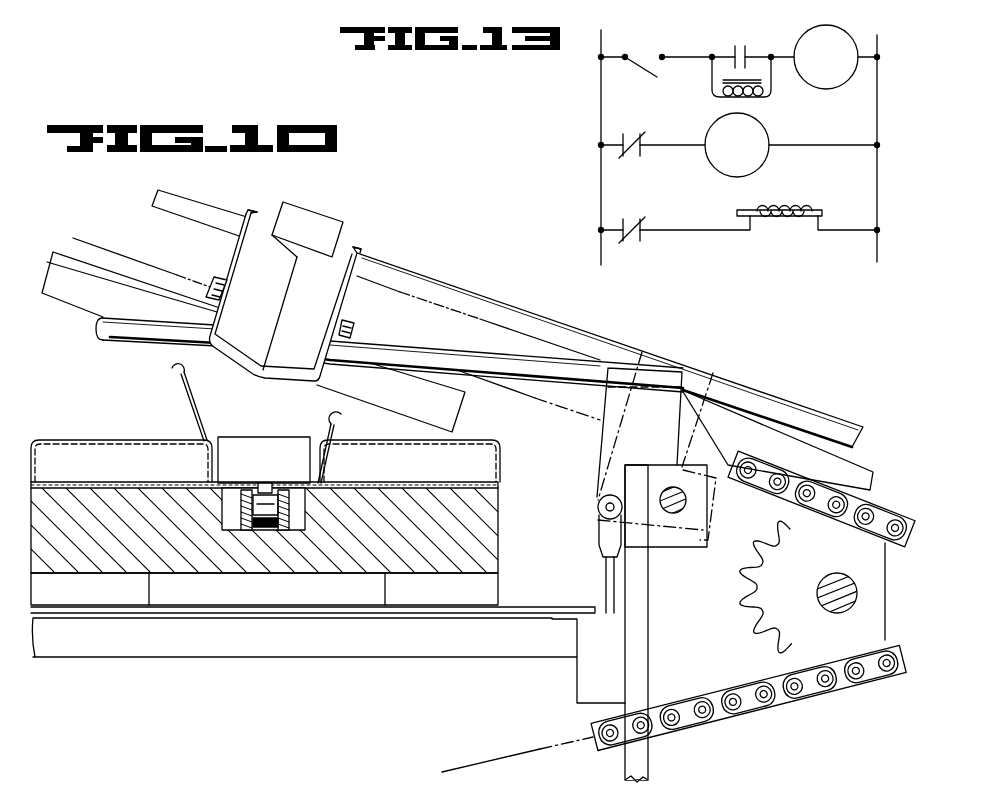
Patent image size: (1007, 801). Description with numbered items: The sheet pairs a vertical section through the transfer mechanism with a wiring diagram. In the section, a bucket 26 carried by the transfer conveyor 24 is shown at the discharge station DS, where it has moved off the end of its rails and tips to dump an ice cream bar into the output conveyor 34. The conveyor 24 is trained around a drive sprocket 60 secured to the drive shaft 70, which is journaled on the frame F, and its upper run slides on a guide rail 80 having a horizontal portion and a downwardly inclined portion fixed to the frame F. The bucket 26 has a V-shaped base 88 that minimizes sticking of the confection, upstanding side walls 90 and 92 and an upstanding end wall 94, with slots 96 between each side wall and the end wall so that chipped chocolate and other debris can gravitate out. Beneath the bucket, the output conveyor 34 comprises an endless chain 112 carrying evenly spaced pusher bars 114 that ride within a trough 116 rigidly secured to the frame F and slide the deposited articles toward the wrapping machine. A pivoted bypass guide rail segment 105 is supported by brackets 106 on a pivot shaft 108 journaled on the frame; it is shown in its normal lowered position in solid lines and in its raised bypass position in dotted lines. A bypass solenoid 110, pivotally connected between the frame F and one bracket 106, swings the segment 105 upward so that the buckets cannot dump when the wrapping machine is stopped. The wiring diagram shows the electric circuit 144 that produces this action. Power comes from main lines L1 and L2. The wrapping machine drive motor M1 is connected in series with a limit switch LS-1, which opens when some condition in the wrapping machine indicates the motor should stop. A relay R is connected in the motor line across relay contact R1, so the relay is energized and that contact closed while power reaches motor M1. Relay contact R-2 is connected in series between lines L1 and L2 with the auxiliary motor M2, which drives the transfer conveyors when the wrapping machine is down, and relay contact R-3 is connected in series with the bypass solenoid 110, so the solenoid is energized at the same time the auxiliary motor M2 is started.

In FIG. 13, the electric circuit 144 is at (702, 137).
In FIG. 13, the bypass solenoid 110 is at (781, 220).
In FIG. 10, the bypass solenoid 110 is at (614, 681).
In FIG. 10, the transfer conveyor 24 is at (119, 250).
In FIG. 10, the article carrying bucket 26 is at (340, 213).
In FIG. 10, the guide rail 80 is at (62, 252).
In FIG. 10, the V-shaped base 88 is at (252, 348).
In FIG. 10, the side wall 90 is at (293, 303).
In FIG. 10, the side wall 92 is at (350, 308).
In FIG. 10, the end wall 94 is at (297, 212).
In FIG. 10, the slots 96 is at (272, 225).
In FIG. 10, the bypass guide rail segment 105 is at (588, 333).
In FIG. 10, the bracket 106 is at (607, 430).
In FIG. 10, the pivot shaft 108 is at (669, 487).
In FIG. 10, the endless chain 112 is at (286, 488).
In FIG. 10, the pusher bar 114 is at (275, 445).
In FIG. 10, the trough 116 is at (213, 455).
In FIG. 10, the output conveyor 34 is at (248, 504).
In FIG. 10, the drive sprocket 60 is at (808, 634).
In FIG. 10, the drive shaft 70 is at (830, 582).
In FIG. 10, the discharge station DS is at (122, 392).
In FIG. 10, the frame F is at (487, 563).
In FIG. 13, the main line L1 is at (597, 136).
In FIG. 13, the main line L2 is at (874, 138).
In FIG. 13, the limit switch LS-1 is at (643, 58).
In FIG. 13, the relay contact R1 is at (748, 52).
In FIG. 13, the relay R is at (771, 93).
In FIG. 13, the drive motor M1 is at (838, 68).
In FIG. 13, the auxiliary motor M2 is at (750, 156).
In FIG. 13, the relay contact R-2 is at (624, 160).
In FIG. 13, the relay contact R-3 is at (624, 246).